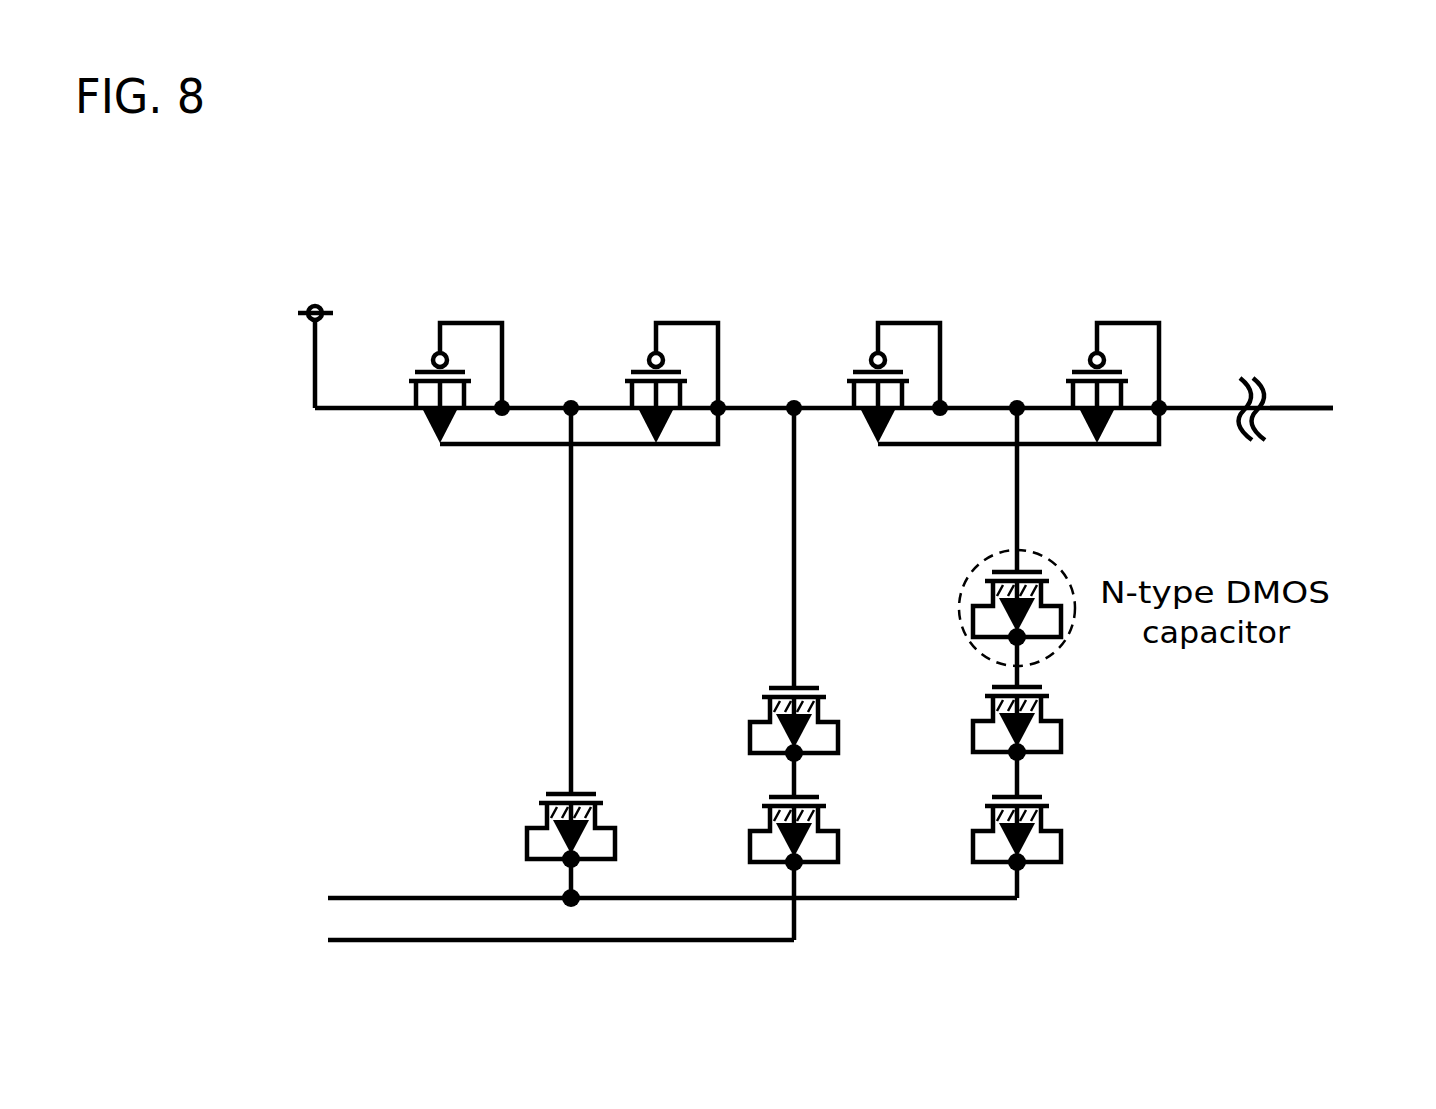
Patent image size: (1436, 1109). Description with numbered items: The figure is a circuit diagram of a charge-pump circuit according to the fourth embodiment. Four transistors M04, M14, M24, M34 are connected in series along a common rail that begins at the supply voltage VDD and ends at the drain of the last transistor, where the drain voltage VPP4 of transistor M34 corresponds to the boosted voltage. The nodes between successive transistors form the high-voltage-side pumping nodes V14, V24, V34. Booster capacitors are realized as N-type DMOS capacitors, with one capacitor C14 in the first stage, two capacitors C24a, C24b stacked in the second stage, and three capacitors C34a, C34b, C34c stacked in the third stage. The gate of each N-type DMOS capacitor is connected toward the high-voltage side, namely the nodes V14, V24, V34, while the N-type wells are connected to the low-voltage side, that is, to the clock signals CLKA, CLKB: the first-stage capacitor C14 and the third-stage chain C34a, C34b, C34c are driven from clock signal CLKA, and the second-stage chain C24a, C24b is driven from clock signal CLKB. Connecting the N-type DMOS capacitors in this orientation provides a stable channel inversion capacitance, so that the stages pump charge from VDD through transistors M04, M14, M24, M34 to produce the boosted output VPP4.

The supply voltage VDD is at (316, 329).
The drain voltage VPP4 is at (1352, 411).
The transistor M04 is at (457, 353).
The transistor M14 is at (674, 353).
The transistor M24 is at (892, 353).
The transistor M34 is at (1111, 353).
The node V14 is at (571, 572).
The node V24 is at (793, 519).
The node V34 is at (1016, 461).
The N-type DMOS capacitor C14 is at (530, 846).
The N-type DMOS capacitor C24a is at (745, 742).
The N-type DMOS capacitor C24b is at (745, 868).
The N-type DMOS capacitor C34a is at (972, 618).
The N-type DMOS capacitor C34b is at (965, 742).
The N-type DMOS capacitor C34c is at (965, 847).
The clock signal CLKA is at (608, 896).
The clock signal CLKB is at (497, 947).